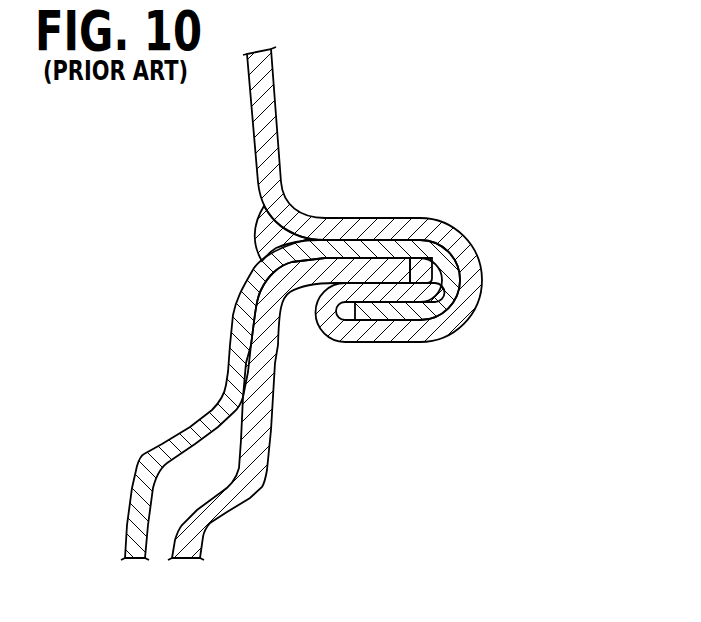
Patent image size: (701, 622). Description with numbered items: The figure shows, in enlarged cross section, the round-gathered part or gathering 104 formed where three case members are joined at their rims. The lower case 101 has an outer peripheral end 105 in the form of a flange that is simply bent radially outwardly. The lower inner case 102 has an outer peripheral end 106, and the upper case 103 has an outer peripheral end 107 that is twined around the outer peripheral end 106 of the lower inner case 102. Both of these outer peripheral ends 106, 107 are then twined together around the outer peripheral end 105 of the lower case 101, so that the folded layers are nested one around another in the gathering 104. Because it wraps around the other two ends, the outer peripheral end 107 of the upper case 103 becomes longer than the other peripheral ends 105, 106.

The lower case 101 is at (247, 500).
The lower inner case 102 is at (144, 454).
The upper case 103 is at (274, 98).
The gathering 104 is at (497, 357).
The outer peripheral end 105 is at (436, 274).
The outer peripheral end 106 is at (443, 299).
The outer peripheral end 107 is at (395, 341).